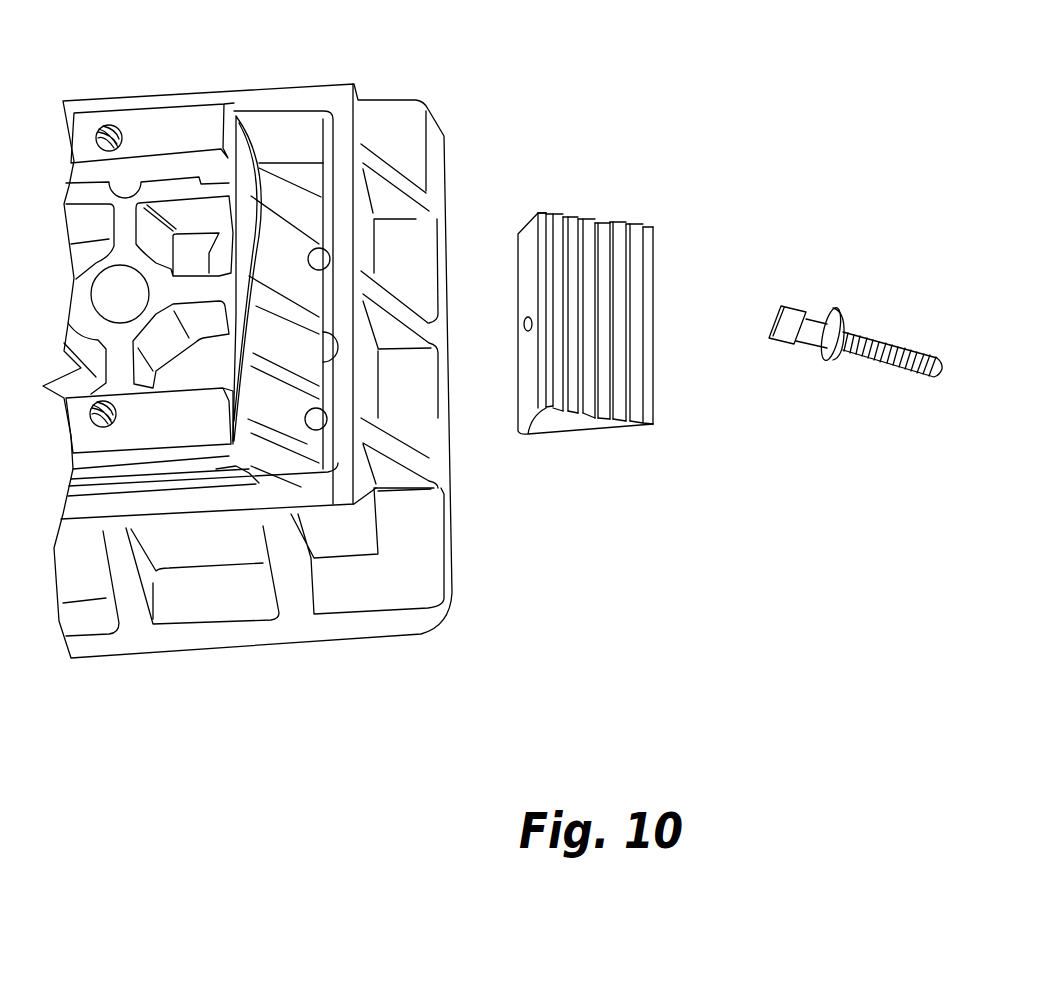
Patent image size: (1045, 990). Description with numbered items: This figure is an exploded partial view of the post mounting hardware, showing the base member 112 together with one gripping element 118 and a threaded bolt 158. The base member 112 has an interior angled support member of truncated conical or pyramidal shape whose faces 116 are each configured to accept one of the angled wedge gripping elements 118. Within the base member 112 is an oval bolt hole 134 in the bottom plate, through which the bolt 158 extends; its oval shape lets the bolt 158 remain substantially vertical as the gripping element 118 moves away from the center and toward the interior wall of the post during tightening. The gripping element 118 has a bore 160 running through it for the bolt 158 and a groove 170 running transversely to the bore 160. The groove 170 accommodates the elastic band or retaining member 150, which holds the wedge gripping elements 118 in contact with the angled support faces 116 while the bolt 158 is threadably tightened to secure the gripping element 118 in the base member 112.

The base member 112 is at (232, 648).
The gripping element 118 is at (175, 123).
The elastic band or retaining member 150 is at (243, 242).
The face 116 is at (283, 277).
The oval bolt hole 134 is at (322, 364).
The bore 160 is at (521, 322).
The groove 170 is at (596, 214).
The threaded bolt 158 is at (815, 368).